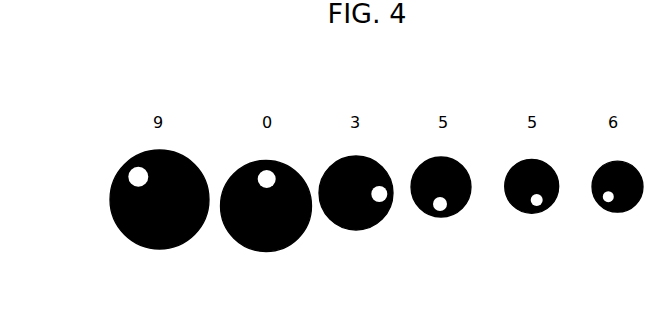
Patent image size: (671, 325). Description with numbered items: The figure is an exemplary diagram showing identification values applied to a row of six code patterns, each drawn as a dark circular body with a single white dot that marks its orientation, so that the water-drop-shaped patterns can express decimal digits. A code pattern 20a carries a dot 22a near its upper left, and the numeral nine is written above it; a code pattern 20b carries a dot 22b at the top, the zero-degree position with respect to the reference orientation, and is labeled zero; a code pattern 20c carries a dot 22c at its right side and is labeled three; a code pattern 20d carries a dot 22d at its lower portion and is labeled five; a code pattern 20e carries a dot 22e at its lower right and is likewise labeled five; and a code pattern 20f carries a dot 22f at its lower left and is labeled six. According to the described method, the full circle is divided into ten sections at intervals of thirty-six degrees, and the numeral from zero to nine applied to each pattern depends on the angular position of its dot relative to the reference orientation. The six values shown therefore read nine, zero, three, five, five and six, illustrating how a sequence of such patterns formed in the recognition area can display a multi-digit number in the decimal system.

The code pattern 20a is at (157, 249).
The dot 22a is at (135, 168).
The code pattern 20b is at (267, 250).
The dot 22b is at (263, 171).
The code pattern 20c is at (357, 231).
The dot 22c is at (387, 168).
The code pattern 20d is at (460, 208).
The dot 22d is at (438, 207).
The code pattern 20e is at (520, 212).
The dot 22e is at (538, 207).
The code pattern 20f is at (637, 203).
The dot 22f is at (607, 202).